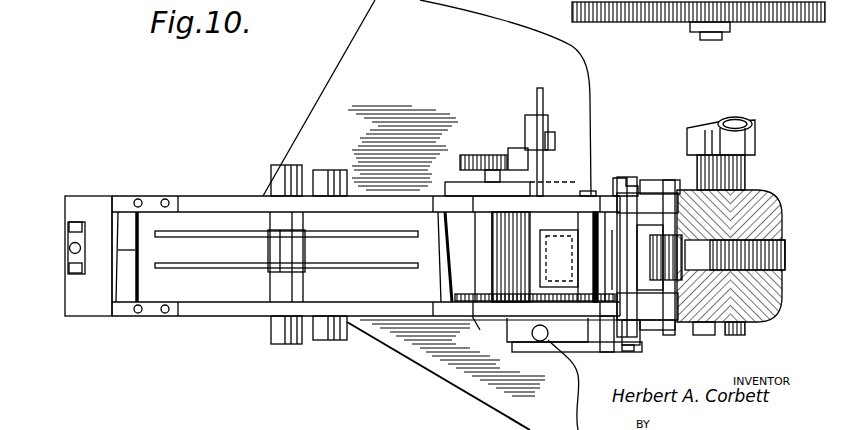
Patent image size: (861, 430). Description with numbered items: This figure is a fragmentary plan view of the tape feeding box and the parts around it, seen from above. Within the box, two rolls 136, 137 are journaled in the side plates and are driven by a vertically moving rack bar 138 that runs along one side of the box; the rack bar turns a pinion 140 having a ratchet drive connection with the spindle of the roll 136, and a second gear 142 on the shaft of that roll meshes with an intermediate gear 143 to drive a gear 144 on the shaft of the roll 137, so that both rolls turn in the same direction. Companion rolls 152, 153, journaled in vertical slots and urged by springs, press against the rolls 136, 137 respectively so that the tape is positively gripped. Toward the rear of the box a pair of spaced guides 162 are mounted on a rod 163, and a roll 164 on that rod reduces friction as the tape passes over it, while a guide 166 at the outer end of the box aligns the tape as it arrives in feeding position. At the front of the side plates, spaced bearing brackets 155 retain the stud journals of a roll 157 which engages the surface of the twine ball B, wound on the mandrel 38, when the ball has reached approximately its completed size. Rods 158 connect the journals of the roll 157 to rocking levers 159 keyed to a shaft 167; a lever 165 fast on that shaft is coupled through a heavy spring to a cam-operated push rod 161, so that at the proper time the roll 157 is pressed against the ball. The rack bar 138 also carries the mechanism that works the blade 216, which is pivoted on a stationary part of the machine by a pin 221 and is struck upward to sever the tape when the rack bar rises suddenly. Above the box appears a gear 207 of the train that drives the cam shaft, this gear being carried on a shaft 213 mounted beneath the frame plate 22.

The frame plate 22 is at (332, 96).
The mandrel 38 is at (746, 170).
The roll 136 is at (462, 250).
The roll 137 is at (655, 166).
The rack bar 138 is at (512, 148).
The pinion 140 is at (487, 155).
The second gear 142 is at (482, 305).
The intermediate gear 143 is at (547, 331).
The gear 144 is at (607, 352).
The roll 152 is at (484, 277).
The roll 153 is at (616, 178).
The bearing brackets 155 is at (640, 328).
The roll 157 is at (731, 256).
The rods 158 is at (722, 335).
The rocking levers 159 is at (660, 328).
The push rod 161 is at (560, 388).
The guides 162 is at (354, 263).
The rod 163 is at (296, 222).
The roll 164 is at (268, 248).
The lever 165 is at (546, 352).
The guide 166 is at (64, 258).
The shaft 167 is at (627, 351).
The gear 207 is at (762, 25).
The shaft 213 is at (708, 42).
The blade 216 is at (563, 181).
The pin 221 is at (533, 115).
The twine ball B is at (770, 208).